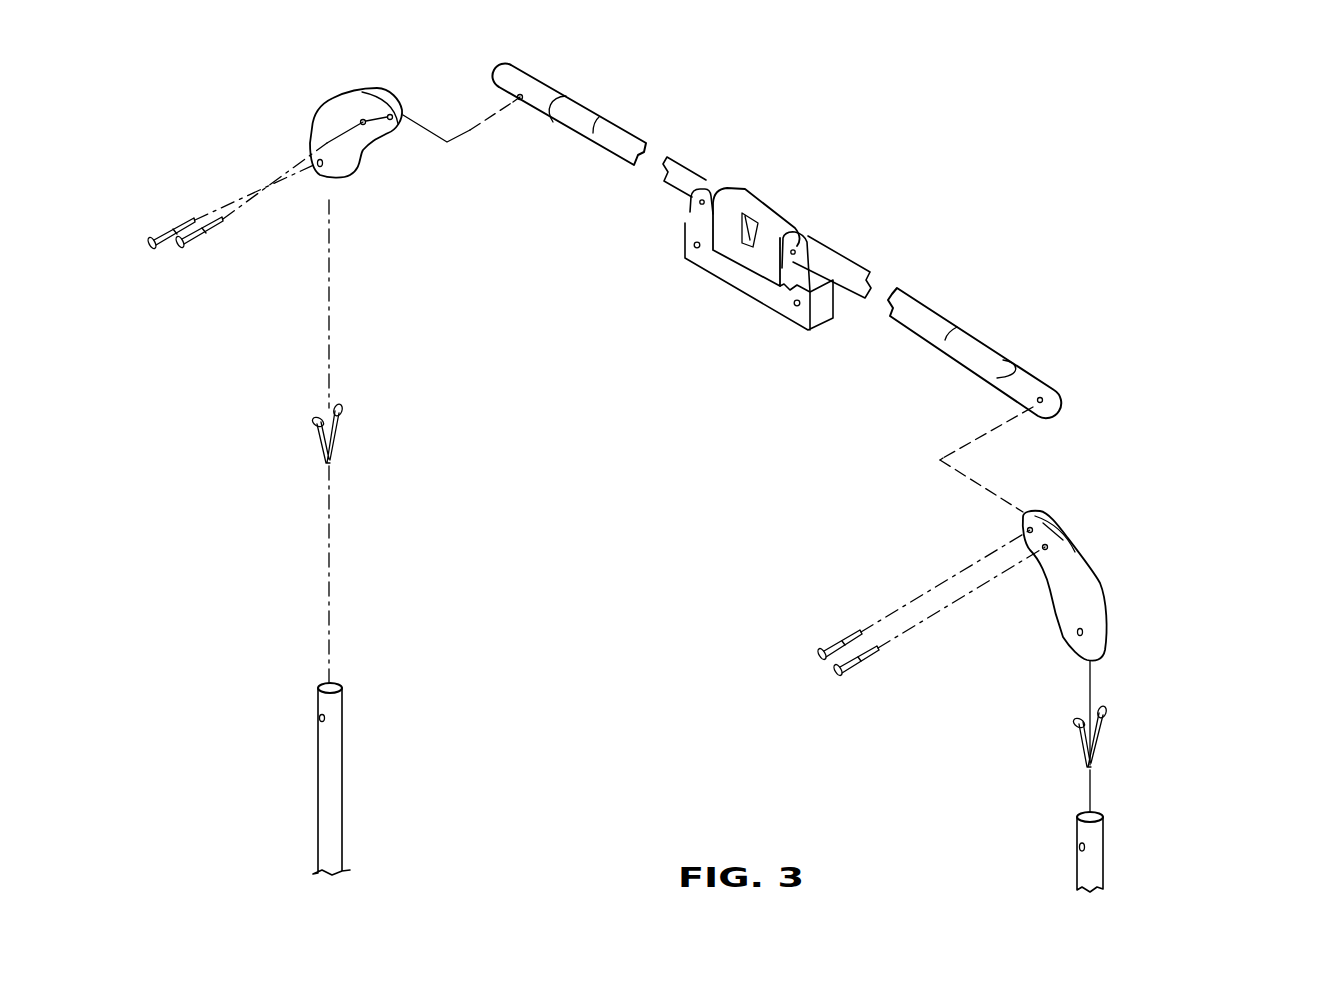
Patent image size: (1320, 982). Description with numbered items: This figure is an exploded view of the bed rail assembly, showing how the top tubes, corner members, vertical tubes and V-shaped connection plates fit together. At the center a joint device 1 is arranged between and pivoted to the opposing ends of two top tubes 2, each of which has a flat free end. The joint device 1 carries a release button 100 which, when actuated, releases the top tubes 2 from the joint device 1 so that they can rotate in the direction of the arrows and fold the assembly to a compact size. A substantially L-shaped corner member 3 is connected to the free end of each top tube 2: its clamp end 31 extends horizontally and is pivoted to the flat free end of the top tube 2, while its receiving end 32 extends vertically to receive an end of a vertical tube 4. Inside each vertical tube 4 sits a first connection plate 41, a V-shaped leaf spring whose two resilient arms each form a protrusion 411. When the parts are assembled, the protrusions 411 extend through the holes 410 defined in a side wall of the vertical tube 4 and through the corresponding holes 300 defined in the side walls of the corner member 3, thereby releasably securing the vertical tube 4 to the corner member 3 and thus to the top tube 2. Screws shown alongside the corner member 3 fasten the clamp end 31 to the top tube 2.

The joint device 1 is at (783, 253).
The release button 100 is at (735, 242).
The top tube 2 is at (683, 182).
The corner member 3 is at (688, 378).
The clamp end 31 is at (378, 105).
The holes 300 is at (343, 178).
The receiving end 32 is at (320, 178).
The vertical tube 4 is at (716, 787).
The first connection plate 41 is at (706, 563).
The holes 410 is at (317, 718).
The protrusion 411 is at (317, 418).